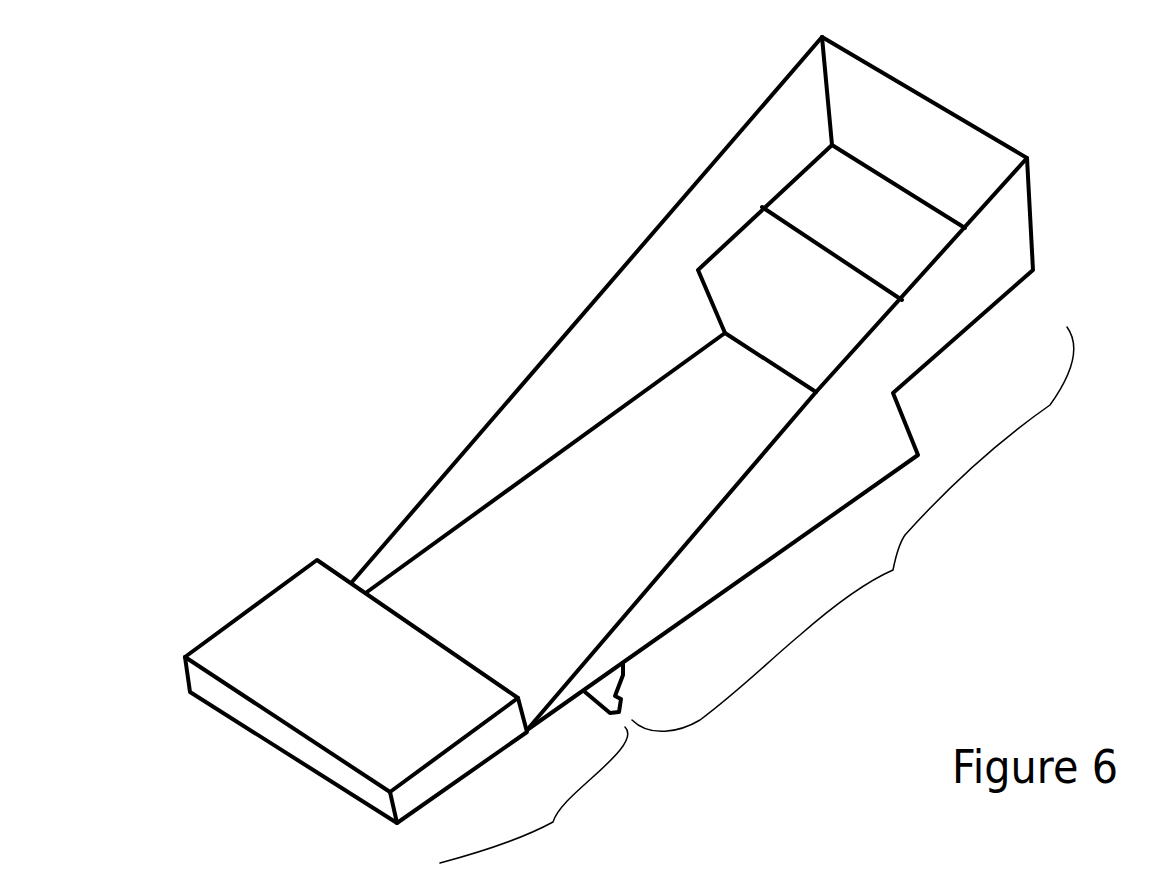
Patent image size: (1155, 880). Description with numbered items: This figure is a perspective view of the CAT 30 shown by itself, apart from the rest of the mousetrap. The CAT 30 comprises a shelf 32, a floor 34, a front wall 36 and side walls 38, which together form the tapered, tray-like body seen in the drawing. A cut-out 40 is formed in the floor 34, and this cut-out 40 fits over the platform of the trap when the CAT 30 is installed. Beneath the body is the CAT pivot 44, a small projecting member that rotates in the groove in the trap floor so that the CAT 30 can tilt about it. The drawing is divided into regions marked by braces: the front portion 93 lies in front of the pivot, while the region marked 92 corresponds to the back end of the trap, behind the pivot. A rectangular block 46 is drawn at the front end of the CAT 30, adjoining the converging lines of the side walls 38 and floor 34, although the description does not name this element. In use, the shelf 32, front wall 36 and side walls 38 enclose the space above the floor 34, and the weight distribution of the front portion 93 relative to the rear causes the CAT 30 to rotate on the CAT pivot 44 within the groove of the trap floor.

The CAT 30 is at (603, 280).
The shelf 32 is at (925, 230).
The floor 34 is at (447, 570).
The front wall 36 is at (895, 115).
The side walls 38 is at (542, 413).
The cut-out 40 is at (745, 267).
The CAT pivot 44 is at (620, 700).
The base block 46 is at (457, 720).
The back end 92 is at (853, 529).
The front portion 93 is at (534, 795).